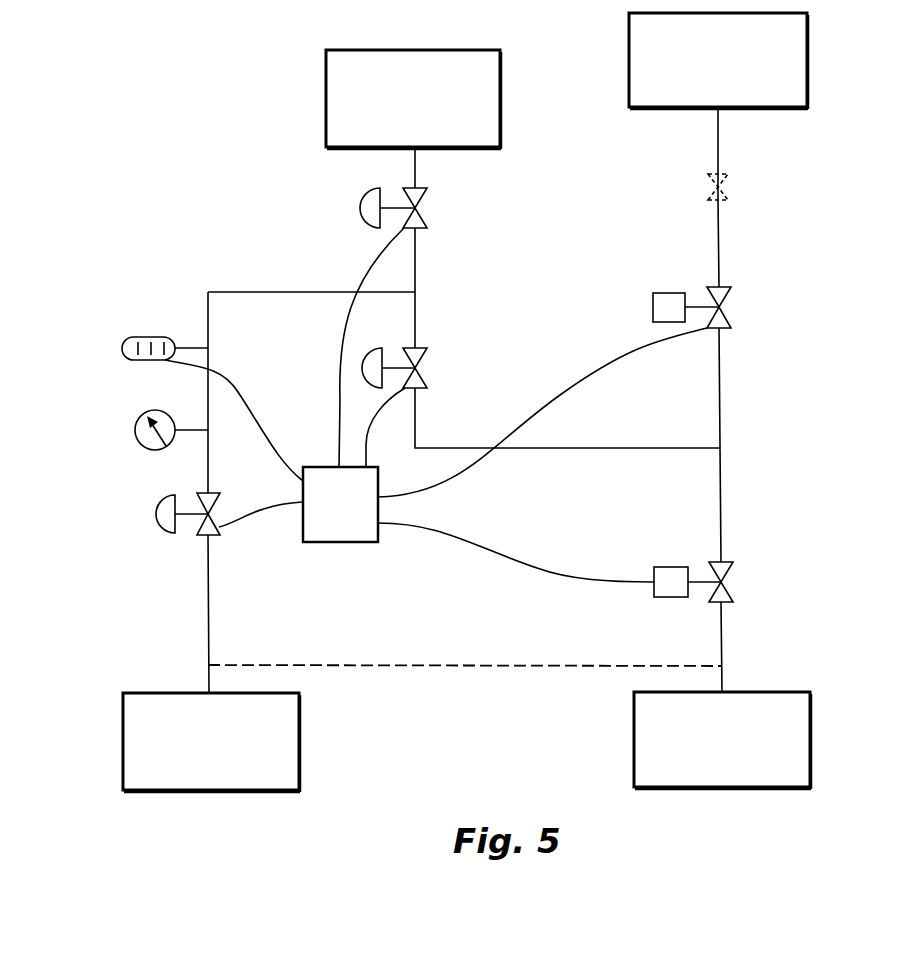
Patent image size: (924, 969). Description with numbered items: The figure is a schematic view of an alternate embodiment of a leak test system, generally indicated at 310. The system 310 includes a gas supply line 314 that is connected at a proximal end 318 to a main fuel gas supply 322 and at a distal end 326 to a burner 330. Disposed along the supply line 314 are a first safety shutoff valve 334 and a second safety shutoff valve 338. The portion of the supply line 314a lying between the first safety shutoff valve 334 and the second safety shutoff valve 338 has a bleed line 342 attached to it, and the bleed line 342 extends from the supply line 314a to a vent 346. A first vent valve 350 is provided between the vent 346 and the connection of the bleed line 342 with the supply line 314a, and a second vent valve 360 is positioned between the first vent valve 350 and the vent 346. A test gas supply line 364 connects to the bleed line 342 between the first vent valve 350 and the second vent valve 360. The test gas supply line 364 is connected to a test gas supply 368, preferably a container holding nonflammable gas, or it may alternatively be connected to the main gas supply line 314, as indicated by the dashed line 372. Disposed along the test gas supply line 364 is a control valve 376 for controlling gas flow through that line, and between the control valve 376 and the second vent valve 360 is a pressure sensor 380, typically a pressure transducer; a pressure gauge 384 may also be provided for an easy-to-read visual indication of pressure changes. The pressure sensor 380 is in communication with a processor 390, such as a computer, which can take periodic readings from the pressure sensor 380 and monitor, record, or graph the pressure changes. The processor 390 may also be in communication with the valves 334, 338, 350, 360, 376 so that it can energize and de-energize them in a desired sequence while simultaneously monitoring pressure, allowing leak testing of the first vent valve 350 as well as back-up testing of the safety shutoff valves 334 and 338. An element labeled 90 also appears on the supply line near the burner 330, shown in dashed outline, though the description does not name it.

The leak test system 310 is at (852, 344).
The gas supply line 314 is at (718, 228).
The portion of the supply line 314a is at (721, 512).
The proximal end 318 is at (722, 682).
The main fuel gas supply 322 is at (810, 716).
The distal end 326 is at (718, 118).
The burner 330 is at (807, 33).
The first safety shutoff valve 334 is at (729, 564).
The second safety shutoff valve 338 is at (728, 290).
The bleed line 342 is at (556, 449).
The vent 346 is at (500, 97).
The first vent valve 350 is at (420, 350).
The second vent valve 360 is at (420, 190).
The test gas supply line 364 is at (312, 292).
The test gas supply 368 is at (299, 715).
The dashed line 372 is at (408, 665).
The control valve 376 is at (157, 513).
The pressure sensor 380 is at (122, 345).
The pressure gauge 384 is at (135, 430).
The processor 390 is at (436, 405).
The optional valve 90 is at (728, 174).